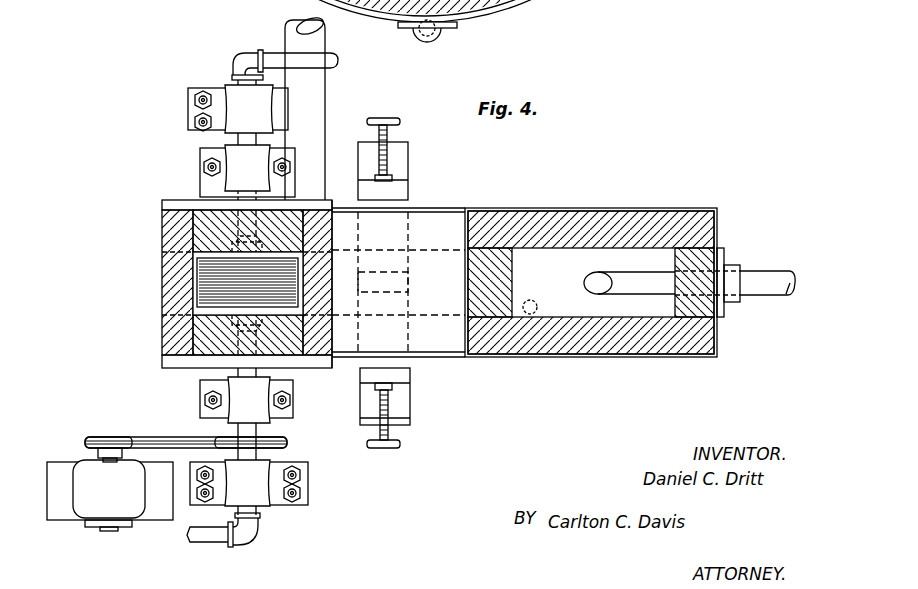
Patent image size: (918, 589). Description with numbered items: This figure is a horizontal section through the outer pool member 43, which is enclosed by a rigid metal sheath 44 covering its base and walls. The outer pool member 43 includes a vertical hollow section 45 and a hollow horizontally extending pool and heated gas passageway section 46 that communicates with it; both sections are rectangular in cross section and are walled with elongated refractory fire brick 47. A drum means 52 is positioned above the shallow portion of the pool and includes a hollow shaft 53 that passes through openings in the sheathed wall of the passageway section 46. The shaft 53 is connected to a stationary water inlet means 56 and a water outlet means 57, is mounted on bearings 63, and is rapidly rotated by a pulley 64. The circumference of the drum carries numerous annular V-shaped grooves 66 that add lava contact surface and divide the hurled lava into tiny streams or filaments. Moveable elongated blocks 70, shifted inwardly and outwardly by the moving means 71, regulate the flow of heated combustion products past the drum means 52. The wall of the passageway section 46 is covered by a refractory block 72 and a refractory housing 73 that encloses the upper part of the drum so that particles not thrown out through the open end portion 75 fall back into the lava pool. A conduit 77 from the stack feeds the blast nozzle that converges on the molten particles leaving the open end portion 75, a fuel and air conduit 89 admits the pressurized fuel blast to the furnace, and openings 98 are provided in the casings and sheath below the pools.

The outer pool member 43 is at (571, 202).
The rigid metal sheath 44 is at (620, 227).
The vertical hollow section 45 is at (556, 278).
The pool and heated gas passageway section 46 is at (403, 282).
The fire brick 47 is at (673, 223).
The drum means 52 is at (200, 272).
The hollow shaft 53 is at (228, 193).
The water inlet means 56 is at (210, 540).
The water outlet means 57 is at (277, 50).
The bearings 63 is at (232, 155).
The pulley 64 is at (215, 437).
The annular V-shaped grooves 66 is at (200, 288).
The moveable elongated blocks 70 is at (395, 193).
The block moving means 71 is at (400, 123).
The refractory block 72 is at (432, 227).
The refractory housing 73 is at (333, 200).
The open end portion 75 is at (163, 257).
The conduit 77 is at (325, 95).
The fuel and air conduit 89 is at (755, 270).
The openings 98 is at (533, 330).